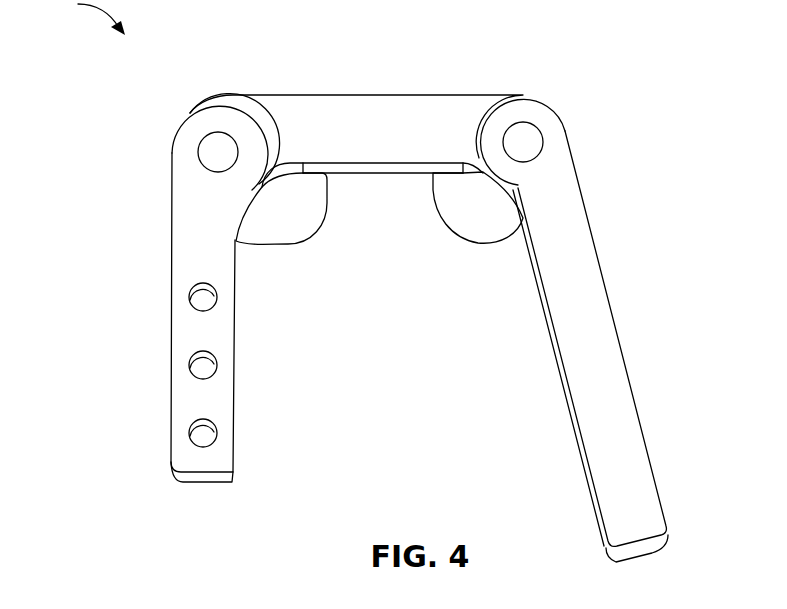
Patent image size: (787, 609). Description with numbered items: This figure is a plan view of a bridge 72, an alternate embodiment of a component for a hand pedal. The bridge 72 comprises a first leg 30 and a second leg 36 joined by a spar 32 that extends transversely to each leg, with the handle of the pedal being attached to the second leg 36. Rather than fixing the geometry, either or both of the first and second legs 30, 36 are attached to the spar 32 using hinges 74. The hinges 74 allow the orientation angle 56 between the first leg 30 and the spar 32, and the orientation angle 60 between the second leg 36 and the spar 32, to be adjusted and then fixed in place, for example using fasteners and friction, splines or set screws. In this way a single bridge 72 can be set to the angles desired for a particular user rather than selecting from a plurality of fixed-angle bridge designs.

The bridge 72 is at (84, 17).
The spar 32 is at (310, 95).
The hinges 74 is at (197, 108).
The first leg 30 is at (170, 213).
The second leg 36 is at (628, 358).
The orientation angle 56 is at (290, 244).
The orientation angle 60 is at (488, 243).